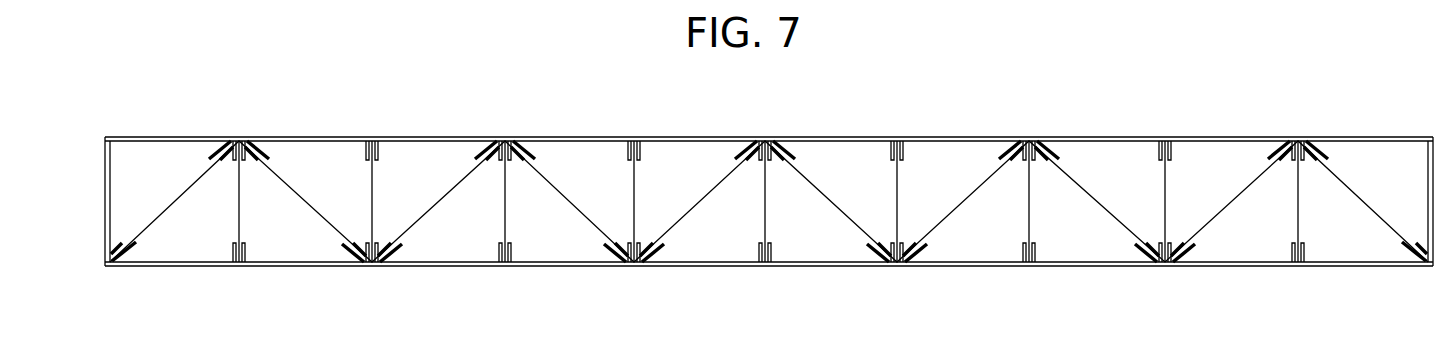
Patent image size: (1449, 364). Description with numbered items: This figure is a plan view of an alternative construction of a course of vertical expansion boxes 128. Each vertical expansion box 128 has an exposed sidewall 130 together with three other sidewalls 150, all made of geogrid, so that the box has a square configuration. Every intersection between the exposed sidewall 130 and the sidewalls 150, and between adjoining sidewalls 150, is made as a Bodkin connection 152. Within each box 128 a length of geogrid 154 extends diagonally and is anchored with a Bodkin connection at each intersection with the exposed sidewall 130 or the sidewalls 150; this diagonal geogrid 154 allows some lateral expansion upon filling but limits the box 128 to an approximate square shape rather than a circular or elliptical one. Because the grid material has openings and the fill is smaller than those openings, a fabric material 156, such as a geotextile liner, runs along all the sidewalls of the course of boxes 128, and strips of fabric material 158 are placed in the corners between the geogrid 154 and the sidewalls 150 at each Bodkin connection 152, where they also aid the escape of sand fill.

The vertical expansion box 128 is at (173, 158).
The exposed sidewall 130 is at (192, 268).
The sidewalls 150 is at (202, 140).
The Bodkin connection 152 is at (107, 137).
The geogrid 154 is at (193, 184).
The fabric material 156 is at (112, 155).
The strips of fabric material 158 is at (385, 247).